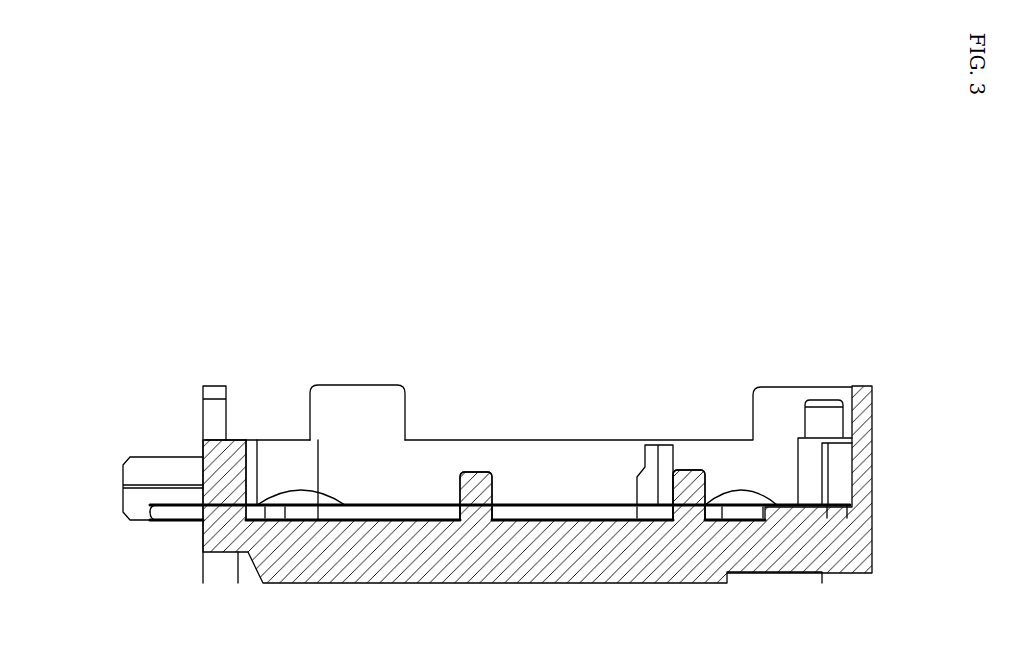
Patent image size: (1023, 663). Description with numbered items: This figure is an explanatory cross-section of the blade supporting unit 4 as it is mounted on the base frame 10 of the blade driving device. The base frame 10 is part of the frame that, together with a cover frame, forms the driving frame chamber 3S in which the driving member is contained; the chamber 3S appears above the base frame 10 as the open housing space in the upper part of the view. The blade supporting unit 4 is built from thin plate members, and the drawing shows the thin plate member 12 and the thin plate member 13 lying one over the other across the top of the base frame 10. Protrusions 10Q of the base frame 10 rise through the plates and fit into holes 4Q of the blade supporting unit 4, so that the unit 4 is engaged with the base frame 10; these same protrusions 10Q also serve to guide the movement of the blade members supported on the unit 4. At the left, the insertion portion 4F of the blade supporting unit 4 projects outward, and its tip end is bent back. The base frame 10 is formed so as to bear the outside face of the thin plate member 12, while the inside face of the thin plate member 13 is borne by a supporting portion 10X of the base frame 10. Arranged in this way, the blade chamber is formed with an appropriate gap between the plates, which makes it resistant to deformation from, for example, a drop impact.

The base frame 10 is at (884, 366).
The protrusion 10Q is at (484, 470).
The supporting portion 10X is at (737, 505).
The thin plate member 12 is at (850, 517).
The thin plate member 13 is at (847, 503).
The blade supporting unit 4 is at (555, 497).
The insertion portion 4F is at (171, 532).
The hole 4Q is at (475, 512).
The driving frame chamber 3S is at (432, 475).